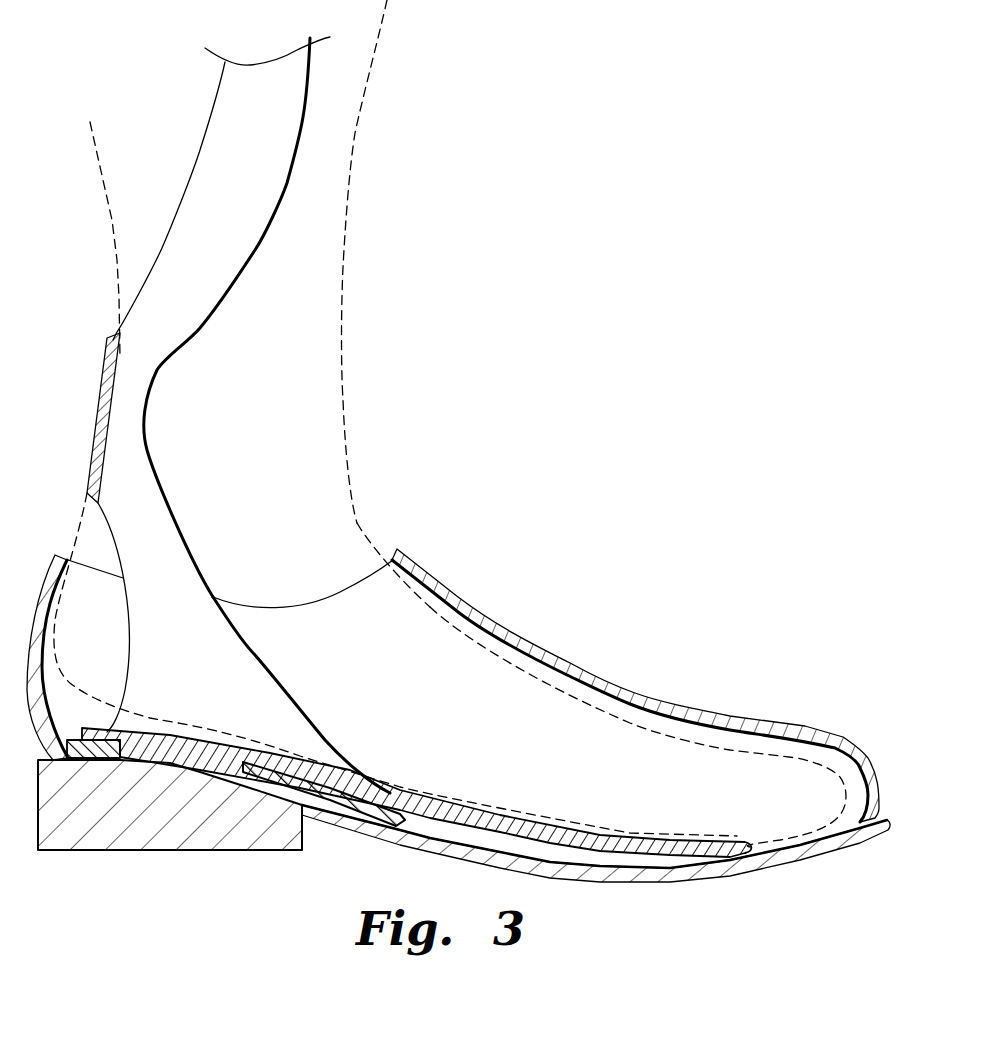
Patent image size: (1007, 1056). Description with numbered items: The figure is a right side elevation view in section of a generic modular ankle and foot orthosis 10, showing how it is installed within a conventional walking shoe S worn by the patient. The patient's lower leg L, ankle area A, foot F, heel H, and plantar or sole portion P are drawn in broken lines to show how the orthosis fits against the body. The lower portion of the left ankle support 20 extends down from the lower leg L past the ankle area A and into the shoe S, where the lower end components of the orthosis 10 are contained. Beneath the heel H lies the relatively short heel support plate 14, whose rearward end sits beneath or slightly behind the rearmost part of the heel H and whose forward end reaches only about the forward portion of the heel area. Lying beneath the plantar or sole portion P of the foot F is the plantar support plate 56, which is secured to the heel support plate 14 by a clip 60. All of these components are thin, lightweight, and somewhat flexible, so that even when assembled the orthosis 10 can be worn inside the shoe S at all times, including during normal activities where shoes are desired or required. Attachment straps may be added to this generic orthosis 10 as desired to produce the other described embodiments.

The ankle and foot orthosis 10 is at (233, 542).
The heel support plate 14 is at (349, 813).
The left ankle support 20 is at (252, 652).
The plantar support plate 56 is at (487, 813).
The clip 60 is at (197, 772).
The lower leg L is at (353, 143).
The ankle area A is at (360, 527).
The foot F is at (493, 658).
The shoe S is at (580, 667).
The heel H is at (72, 685).
The plantar or sole portion P is at (567, 887).